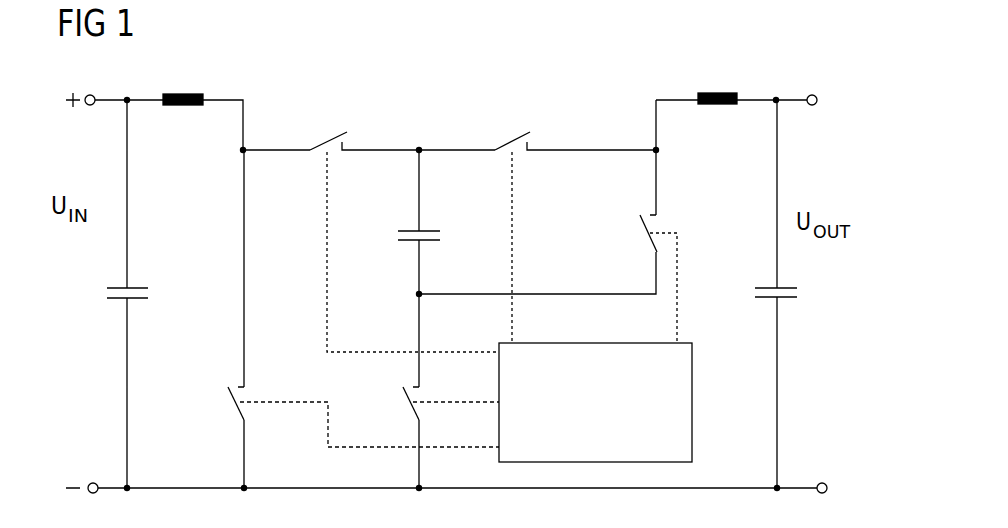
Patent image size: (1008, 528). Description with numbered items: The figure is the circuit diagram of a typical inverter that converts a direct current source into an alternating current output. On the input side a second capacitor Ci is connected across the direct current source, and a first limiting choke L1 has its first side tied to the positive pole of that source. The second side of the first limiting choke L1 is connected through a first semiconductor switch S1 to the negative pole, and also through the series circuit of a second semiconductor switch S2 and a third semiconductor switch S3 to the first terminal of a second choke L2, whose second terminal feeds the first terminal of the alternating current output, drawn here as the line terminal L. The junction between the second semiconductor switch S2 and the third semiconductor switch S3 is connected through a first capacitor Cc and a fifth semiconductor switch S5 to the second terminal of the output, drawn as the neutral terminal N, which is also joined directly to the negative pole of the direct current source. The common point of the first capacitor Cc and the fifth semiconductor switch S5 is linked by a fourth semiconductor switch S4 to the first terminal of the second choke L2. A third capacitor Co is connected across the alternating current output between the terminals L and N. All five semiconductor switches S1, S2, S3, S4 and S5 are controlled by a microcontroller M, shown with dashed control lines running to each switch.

The first limiting choke L1 is at (183, 94).
The second choke L2 is at (716, 93).
The first semiconductor switch S1 is at (236, 404).
The second semiconductor switch S2 is at (327, 141).
The third semiconductor switch S3 is at (513, 141).
The fourth semiconductor switch S4 is at (648, 232).
The fifth semiconductor switch S5 is at (410, 404).
The first capacitor Cc is at (398, 236).
The second capacitor Ci is at (140, 297).
The third capacitor Co is at (760, 296).
The microcontroller M is at (692, 420).
The line output terminal L is at (818, 100).
The neutral output terminal N is at (828, 488).